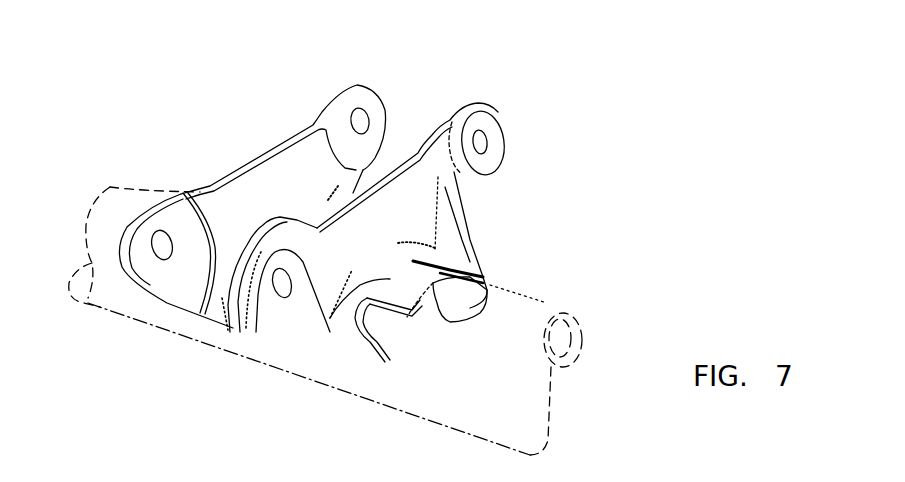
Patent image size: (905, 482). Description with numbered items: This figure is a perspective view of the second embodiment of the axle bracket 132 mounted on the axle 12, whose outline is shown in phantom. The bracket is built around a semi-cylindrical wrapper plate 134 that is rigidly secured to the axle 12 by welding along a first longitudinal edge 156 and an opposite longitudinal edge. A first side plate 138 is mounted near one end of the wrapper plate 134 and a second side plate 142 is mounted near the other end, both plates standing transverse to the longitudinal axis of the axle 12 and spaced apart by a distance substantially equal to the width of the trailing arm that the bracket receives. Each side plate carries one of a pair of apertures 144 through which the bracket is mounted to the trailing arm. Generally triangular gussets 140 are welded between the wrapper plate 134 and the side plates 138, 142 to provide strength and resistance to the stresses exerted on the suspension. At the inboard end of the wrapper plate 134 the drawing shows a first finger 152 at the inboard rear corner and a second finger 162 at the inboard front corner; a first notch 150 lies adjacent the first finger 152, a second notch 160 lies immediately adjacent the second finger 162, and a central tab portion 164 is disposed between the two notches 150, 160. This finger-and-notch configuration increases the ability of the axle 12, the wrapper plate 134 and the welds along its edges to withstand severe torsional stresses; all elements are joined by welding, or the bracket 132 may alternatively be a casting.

The axle 12 is at (580, 355).
The axle bracket 132 is at (628, 203).
The wrapper plate 134 is at (327, 312).
The first side plate 138 is at (450, 138).
The gussets 140 is at (452, 237).
The second side plate 142 is at (278, 177).
The apertures 144 is at (363, 112).
The first notch 150 is at (362, 322).
The first finger 152 is at (363, 360).
The first longitudinal edge 156 is at (243, 328).
The second notch 160 is at (413, 263).
The second finger 162 is at (457, 308).
The central tab portion 164 is at (390, 279).